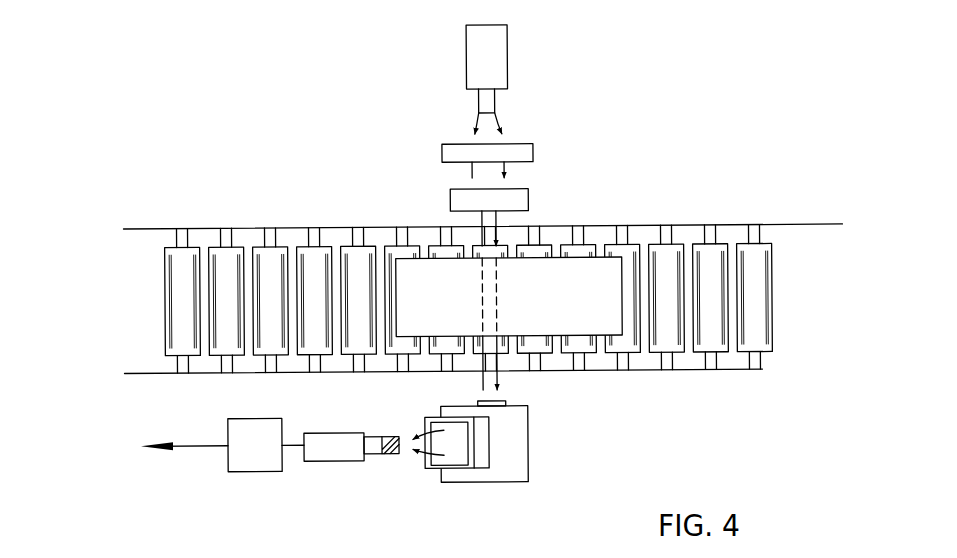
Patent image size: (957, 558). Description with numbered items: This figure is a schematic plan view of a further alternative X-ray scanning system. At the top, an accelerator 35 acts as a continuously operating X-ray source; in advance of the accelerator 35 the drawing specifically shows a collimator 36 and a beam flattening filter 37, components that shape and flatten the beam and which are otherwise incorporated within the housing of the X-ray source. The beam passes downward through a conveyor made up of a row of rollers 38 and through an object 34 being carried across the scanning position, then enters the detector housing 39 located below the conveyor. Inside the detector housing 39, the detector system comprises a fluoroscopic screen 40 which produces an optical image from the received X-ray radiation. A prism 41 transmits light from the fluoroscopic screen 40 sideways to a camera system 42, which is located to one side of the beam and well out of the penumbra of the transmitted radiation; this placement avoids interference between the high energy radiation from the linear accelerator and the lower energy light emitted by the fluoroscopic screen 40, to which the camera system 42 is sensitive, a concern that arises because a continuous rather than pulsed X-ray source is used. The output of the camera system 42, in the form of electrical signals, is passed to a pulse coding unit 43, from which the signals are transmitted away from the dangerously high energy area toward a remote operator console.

The conveyed article / container 34 is at (572, 325).
The accelerator 35 is at (476, 67).
The collimator 36 is at (530, 153).
The beam flattening filter 37 is at (457, 202).
The conveyor roller 38 is at (228, 263).
The detector housing 39 is at (517, 451).
The fluoroscopic screen 40 is at (455, 460).
The prism 41 is at (385, 453).
The camera system 42 is at (340, 440).
The pulse coding unit 43 is at (250, 463).